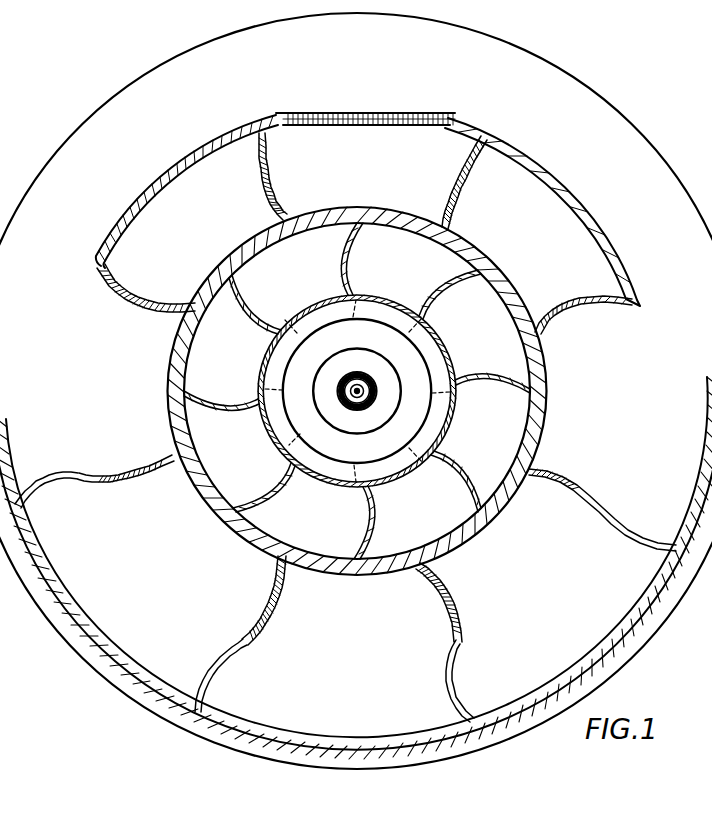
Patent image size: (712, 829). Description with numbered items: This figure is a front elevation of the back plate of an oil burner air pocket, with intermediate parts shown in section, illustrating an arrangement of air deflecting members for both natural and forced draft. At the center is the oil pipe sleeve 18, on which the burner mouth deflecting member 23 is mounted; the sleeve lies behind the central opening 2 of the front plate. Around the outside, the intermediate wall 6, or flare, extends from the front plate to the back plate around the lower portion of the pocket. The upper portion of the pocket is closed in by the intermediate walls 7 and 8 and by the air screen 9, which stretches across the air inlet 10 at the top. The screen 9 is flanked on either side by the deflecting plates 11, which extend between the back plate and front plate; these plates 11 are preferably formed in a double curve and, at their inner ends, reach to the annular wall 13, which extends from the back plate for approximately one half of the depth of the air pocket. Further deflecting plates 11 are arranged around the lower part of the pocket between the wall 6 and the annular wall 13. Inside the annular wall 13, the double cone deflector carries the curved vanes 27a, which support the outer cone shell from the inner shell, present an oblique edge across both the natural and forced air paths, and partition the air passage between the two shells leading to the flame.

The central opening 2 is at (357, 371).
The intermediate wall 6 is at (110, 645).
The intermediate wall 7 is at (143, 213).
The intermediate wall 8 is at (587, 226).
The air screen 9 is at (317, 114).
The air inlet 10 is at (368, 186).
The deflecting plates 11 is at (267, 173).
The annular wall 13 is at (549, 405).
The oil pipe sleeve 18 is at (352, 402).
The burner mouth deflecting member 23 is at (360, 348).
The vanes 27a is at (471, 377).